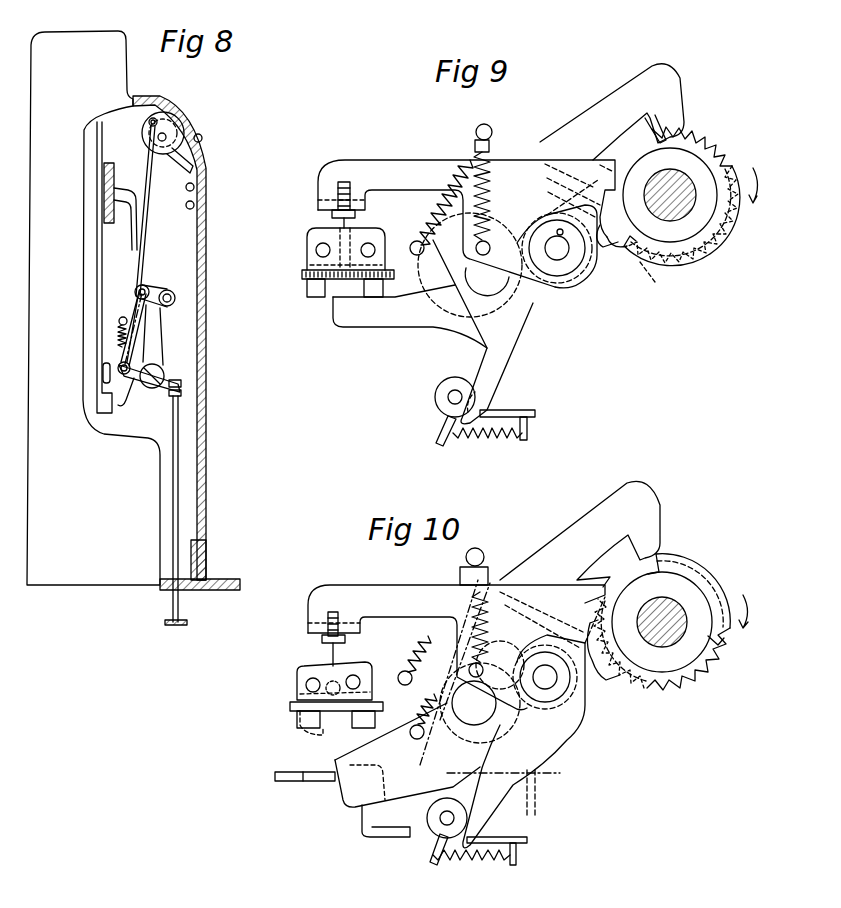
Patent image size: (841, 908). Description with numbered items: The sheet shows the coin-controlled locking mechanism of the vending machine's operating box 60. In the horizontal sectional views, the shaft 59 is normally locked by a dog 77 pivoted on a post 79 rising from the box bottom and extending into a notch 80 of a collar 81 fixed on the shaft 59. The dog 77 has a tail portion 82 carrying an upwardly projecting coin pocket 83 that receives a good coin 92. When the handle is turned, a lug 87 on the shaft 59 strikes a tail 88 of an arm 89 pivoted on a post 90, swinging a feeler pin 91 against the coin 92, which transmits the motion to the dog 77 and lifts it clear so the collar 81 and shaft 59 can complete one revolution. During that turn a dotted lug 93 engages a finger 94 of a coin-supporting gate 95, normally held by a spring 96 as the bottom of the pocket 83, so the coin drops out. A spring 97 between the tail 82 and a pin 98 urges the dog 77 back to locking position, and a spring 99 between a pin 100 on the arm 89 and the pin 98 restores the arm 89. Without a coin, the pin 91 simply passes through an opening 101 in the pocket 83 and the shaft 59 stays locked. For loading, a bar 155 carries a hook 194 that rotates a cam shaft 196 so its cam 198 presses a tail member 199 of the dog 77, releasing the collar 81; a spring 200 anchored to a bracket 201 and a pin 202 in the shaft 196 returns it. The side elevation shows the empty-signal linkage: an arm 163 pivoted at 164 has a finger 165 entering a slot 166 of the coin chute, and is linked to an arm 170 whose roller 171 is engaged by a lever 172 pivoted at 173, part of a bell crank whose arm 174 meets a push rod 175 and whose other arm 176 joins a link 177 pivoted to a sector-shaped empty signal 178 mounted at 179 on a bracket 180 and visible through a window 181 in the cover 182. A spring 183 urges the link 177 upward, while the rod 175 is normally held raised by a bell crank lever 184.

In FIG. 8, the box 60 is at (93, 308).
In FIG. 8, the arm 163 is at (128, 248).
In FIG. 8, the pivot 164 is at (144, 282).
In FIG. 8, the finger 165 is at (104, 196).
In FIG. 8, the slot 166 is at (104, 183).
In FIG. 8, the arm 170 is at (149, 290).
In FIG. 8, the roller 171 is at (176, 298).
In FIG. 8, the lever 172 is at (159, 333).
In FIG. 8, the pivot 173 is at (160, 362).
In FIG. 8, the arm 174 is at (182, 391).
In FIG. 8, the push rod 175 is at (179, 422).
In FIG. 8, the arm 176 is at (135, 380).
In FIG. 8, the link 177 is at (148, 152).
In FIG. 8, the empty signal 178 is at (168, 118).
In FIG. 8, the pivot 179 is at (167, 137).
In FIG. 8, the bracket 180 is at (191, 170).
In FIG. 8, the window 181 is at (202, 140).
In FIG. 8, the cover 182 is at (206, 517).
In FIG. 8, the spring 183 is at (120, 348).
In FIG. 8, the bell crank lever 184 is at (175, 627).
In FIG. 9, the shaft 59 is at (682, 212).
In FIG. 10, the shaft 59 is at (682, 608).
In FIG. 9, the dog 77 is at (672, 82).
In FIG. 10, the dog 77 is at (650, 500).
In FIG. 9, the post 79 is at (487, 300).
In FIG. 10, the post 79 is at (492, 712).
In FIG. 9, the notch 80 is at (656, 133).
In FIG. 10, the notch 80 is at (720, 646).
In FIG. 9, the collar 81 is at (738, 228).
In FIG. 10, the collar 81 is at (672, 690).
In FIG. 9, the tail portion 82 is at (402, 232).
In FIG. 10, the tail portion 82 is at (393, 665).
In FIG. 9, the coin pocket 83 is at (394, 282).
In FIG. 10, the coin pocket 83 is at (290, 710).
In FIG. 9, the lug 87 is at (618, 258).
In FIG. 10, the lug 87 is at (682, 567).
In FIG. 9, the tail 88 is at (600, 182).
In FIG. 9, the arm 89 is at (424, 162).
In FIG. 10, the arm 89 is at (340, 584).
In FIG. 9, the post 90 is at (560, 262).
In FIG. 10, the post 90 is at (556, 685).
In FIG. 9, the feeler pin 91 is at (336, 225).
In FIG. 10, the feeler pin 91 is at (328, 658).
In FIG. 9, the coin 92 is at (302, 275).
In FIG. 9, the lug 93 is at (655, 277).
In FIG. 9, the finger 94 is at (606, 247).
In FIG. 10, the finger 94 is at (606, 680).
In FIG. 9, the coin-supporting gate 95 is at (398, 332).
In FIG. 10, the coin-supporting gate 95 is at (352, 806).
In FIG. 9, the spring 96 is at (458, 275).
In FIG. 10, the spring 96 is at (420, 740).
In FIG. 9, the spring 97 is at (445, 193).
In FIG. 10, the spring 97 is at (420, 650).
In FIG. 9, the pin 98 is at (486, 124).
In FIG. 10, the pin 98 is at (485, 557).
In FIG. 9, the spring 99 is at (492, 182).
In FIG. 10, the spring 99 is at (474, 614).
In FIG. 9, the pin 100 is at (476, 248).
In FIG. 10, the pin 100 is at (476, 670).
In FIG. 10, the opening 101 is at (324, 726).
In FIG. 10, the bar 155 is at (372, 843).
In FIG. 10, the hook 194 is at (290, 782).
In FIG. 9, the cam shaft 196 is at (448, 397).
In FIG. 10, the cam shaft 196 is at (447, 823).
In FIG. 9, the cam 198 is at (438, 410).
In FIG. 10, the cam 198 is at (432, 826).
In FIG. 9, the tail member 199 is at (500, 377).
In FIG. 10, the tail member 199 is at (500, 803).
In FIG. 9, the spring 200 is at (480, 438).
In FIG. 10, the spring 200 is at (488, 860).
In FIG. 9, the bracket 201 is at (536, 420).
In FIG. 10, the bracket 201 is at (528, 840).
In FIG. 9, the pin 202 is at (439, 443).
In FIG. 10, the pin 202 is at (433, 865).